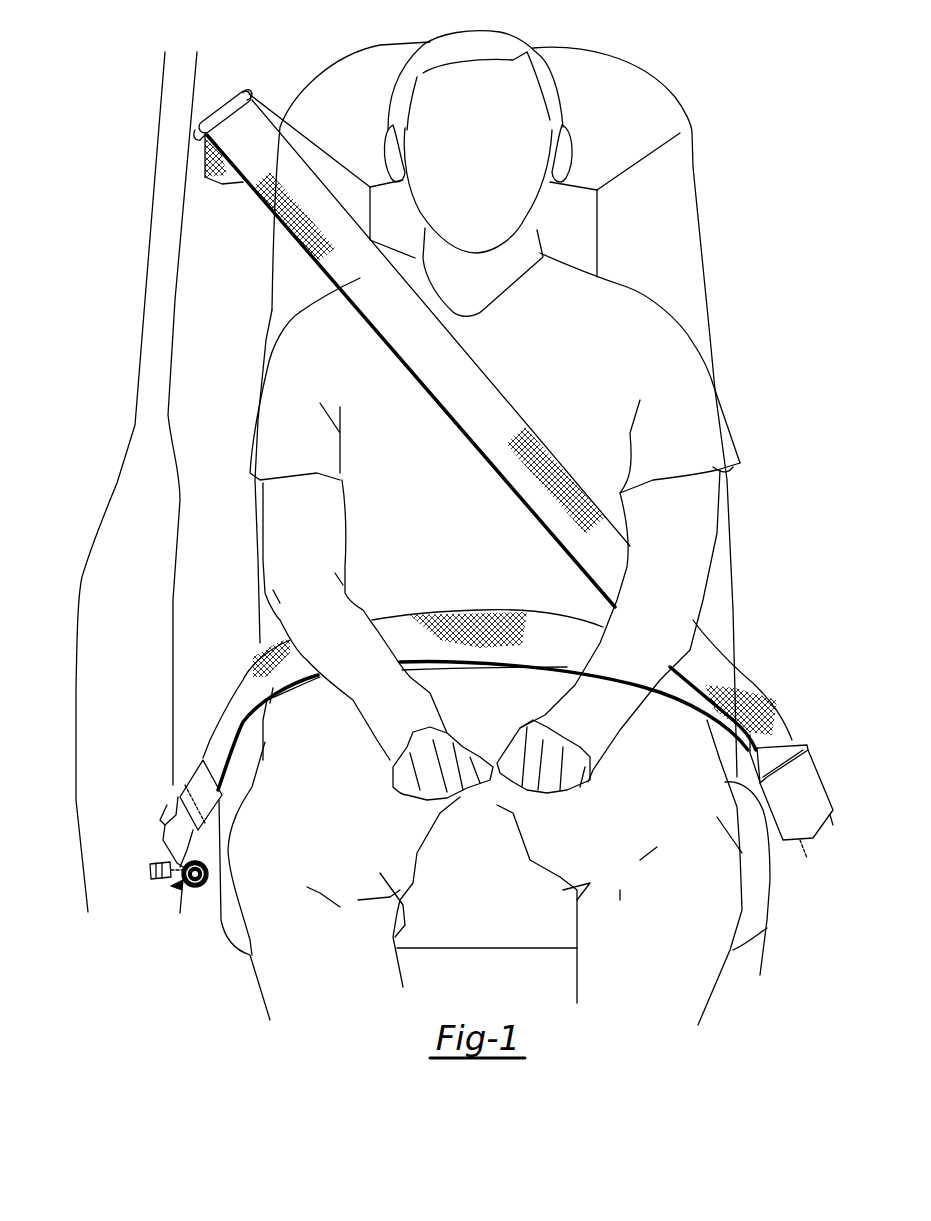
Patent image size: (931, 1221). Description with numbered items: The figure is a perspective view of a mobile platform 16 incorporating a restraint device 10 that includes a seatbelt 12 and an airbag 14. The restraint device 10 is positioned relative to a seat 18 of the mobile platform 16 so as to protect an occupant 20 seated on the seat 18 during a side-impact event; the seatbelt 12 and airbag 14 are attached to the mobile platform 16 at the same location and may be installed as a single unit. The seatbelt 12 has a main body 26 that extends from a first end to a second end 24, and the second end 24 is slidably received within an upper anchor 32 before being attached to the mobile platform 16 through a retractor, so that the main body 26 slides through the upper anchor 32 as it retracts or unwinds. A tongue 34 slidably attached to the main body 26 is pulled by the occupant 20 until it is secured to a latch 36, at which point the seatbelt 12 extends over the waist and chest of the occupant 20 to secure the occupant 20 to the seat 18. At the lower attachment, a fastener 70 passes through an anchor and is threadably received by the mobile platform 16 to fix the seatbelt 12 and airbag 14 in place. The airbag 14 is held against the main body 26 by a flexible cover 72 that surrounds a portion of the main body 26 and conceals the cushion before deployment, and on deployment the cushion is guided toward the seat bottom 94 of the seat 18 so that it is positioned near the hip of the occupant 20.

The restraint device 10 is at (165, 776).
The seatbelt 12 is at (737, 688).
The airbag 14 is at (173, 887).
The mobile platform 16 is at (152, 216).
The seat 18 is at (692, 116).
The occupant 20 is at (703, 405).
The second end 24 is at (243, 182).
The main body 26 is at (513, 433).
The upper anchor 32 is at (251, 91).
The tongue 34 is at (785, 736).
The latch 36 is at (813, 783).
The fastener 70 is at (148, 871).
The cover 72 is at (180, 810).
The seat bottom 94 is at (588, 893).